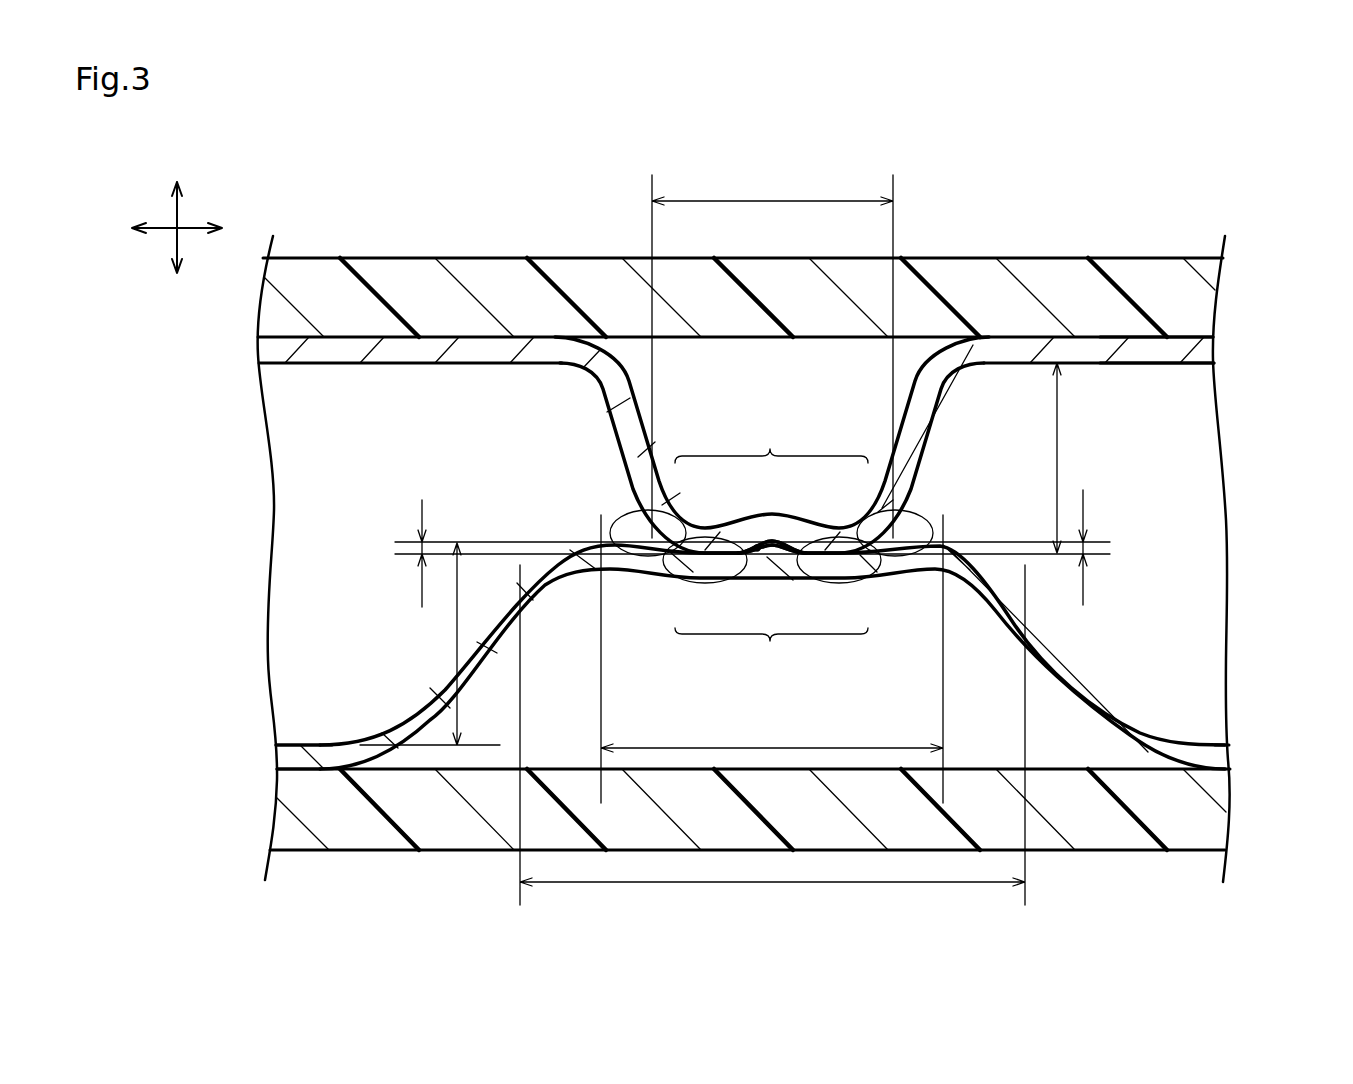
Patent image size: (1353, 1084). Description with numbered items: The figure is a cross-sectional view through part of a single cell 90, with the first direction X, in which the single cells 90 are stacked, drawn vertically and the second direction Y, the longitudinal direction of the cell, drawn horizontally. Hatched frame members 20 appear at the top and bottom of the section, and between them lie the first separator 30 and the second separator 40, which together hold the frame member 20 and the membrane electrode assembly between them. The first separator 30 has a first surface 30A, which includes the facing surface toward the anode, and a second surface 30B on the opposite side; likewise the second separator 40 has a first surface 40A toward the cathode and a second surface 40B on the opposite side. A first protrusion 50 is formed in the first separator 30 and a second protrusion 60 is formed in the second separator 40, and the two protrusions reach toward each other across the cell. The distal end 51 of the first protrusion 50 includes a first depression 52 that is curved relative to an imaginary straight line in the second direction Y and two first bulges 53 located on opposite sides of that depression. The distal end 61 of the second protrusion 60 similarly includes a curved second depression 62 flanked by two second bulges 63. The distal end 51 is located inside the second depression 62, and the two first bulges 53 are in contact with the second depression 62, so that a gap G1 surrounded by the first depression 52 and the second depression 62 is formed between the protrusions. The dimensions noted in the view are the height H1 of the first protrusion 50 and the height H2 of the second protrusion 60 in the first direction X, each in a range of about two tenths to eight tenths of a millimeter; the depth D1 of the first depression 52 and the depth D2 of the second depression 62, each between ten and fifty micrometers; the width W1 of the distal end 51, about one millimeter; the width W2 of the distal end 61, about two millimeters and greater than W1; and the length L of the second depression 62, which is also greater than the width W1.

The frame member 20 is at (1126, 242).
The single cell 90 is at (744, 559).
The first separator 30 is at (1227, 354).
The first surface 30A is at (1213, 337).
The second surface 30B is at (1213, 363).
The second separator 40 is at (264, 756).
The first surface 40A is at (292, 769).
The second surface 40B is at (292, 745).
The first protrusion 50 is at (930, 456).
The second protrusion 60 is at (1094, 639).
The distal end 61 is at (771, 442).
The second depression 62 is at (790, 530).
The second bulges 63 is at (677, 512).
The distal end 51 is at (771, 650).
The first depression 52 is at (763, 565).
The first bulges 53 is at (722, 562).
The gap G1 is at (685, 562).
The height of the first protrusion H1 is at (1060, 460).
The height of the second protrusion H2 is at (455, 644).
The depth of the first depression D1 is at (1088, 548).
The depth of the second depression D2 is at (415, 549).
The width of the first protrusion W1 is at (772, 200).
The width of the second protrusion W2 is at (783, 882).
The length of the second depression L is at (827, 748).
The first direction X is at (177, 212).
The second direction Y is at (167, 228).